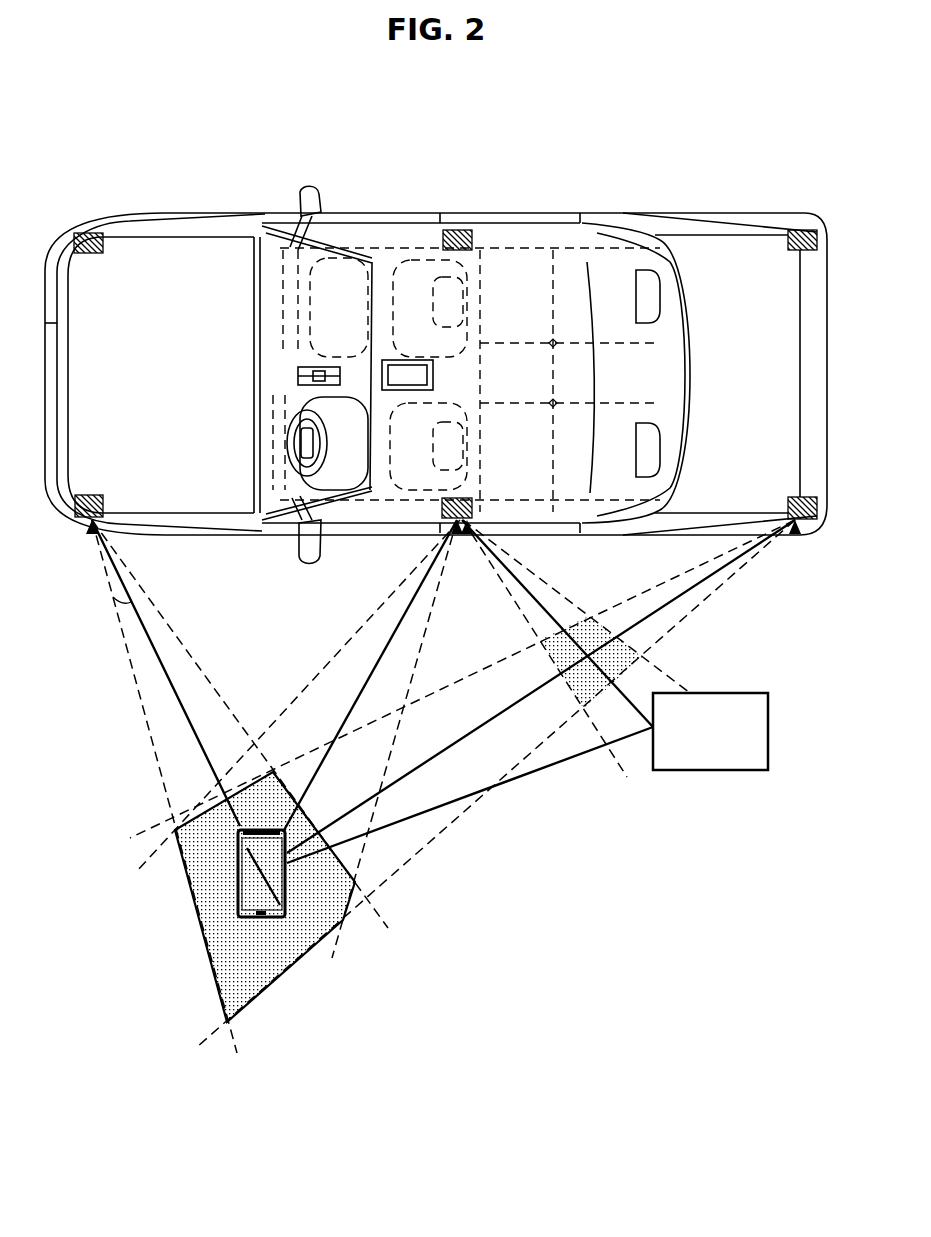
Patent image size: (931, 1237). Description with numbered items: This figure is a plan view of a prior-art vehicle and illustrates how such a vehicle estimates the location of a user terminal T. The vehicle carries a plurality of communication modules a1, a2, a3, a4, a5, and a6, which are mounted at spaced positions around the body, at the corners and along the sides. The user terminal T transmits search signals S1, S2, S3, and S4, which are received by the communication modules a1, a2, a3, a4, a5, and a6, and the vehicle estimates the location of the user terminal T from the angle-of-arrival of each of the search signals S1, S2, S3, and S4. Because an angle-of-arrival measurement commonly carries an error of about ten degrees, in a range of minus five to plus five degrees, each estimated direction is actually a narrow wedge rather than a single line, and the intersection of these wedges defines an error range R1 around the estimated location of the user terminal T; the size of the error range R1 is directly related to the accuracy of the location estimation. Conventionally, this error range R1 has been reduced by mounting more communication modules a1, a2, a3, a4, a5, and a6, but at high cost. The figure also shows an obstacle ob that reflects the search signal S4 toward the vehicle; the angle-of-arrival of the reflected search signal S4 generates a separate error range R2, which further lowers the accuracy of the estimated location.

The communication module a1 is at (90, 495).
The communication module a2 is at (473, 511).
The communication module a3 is at (792, 497).
The communication module a4 is at (800, 230).
The communication module a5 is at (459, 228).
The communication module a6 is at (92, 232).
The search signal S1 is at (147, 637).
The search signal S2 is at (404, 607).
The search signal S3 is at (722, 572).
The search signal S4 is at (530, 600).
The error range R1 is at (230, 961).
The separate error range R2 is at (648, 655).
The user terminal T is at (238, 893).
The obstacle ob is at (710, 731).